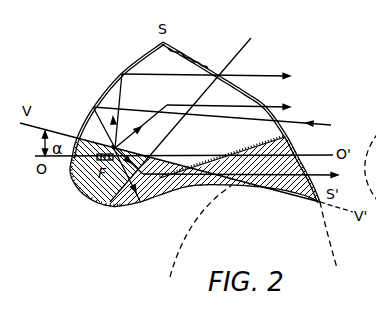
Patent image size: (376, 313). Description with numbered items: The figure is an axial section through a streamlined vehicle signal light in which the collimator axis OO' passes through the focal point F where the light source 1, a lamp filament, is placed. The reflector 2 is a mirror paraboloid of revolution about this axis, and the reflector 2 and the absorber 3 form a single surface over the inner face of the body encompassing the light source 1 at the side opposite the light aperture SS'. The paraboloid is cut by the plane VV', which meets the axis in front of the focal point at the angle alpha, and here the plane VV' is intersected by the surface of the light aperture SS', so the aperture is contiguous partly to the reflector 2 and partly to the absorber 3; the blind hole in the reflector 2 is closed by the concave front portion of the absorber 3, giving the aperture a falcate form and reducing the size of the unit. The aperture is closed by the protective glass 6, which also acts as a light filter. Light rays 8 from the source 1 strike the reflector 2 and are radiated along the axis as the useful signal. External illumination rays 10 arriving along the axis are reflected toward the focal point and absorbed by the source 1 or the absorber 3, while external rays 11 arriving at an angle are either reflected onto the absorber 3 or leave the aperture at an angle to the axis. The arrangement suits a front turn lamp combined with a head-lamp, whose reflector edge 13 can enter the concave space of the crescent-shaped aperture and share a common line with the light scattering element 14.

The light source 1 is at (100, 162).
The reflector 2 is at (118, 100).
The absorber 3 is at (126, 206).
The protective glass 6 is at (208, 67).
The light rays 8 is at (237, 127).
The external illumination rays 10 is at (221, 121).
The external illumination rays 11 is at (192, 117).
The edge of the reflector 13 is at (200, 231).
The light scattering element 14 is at (325, 240).